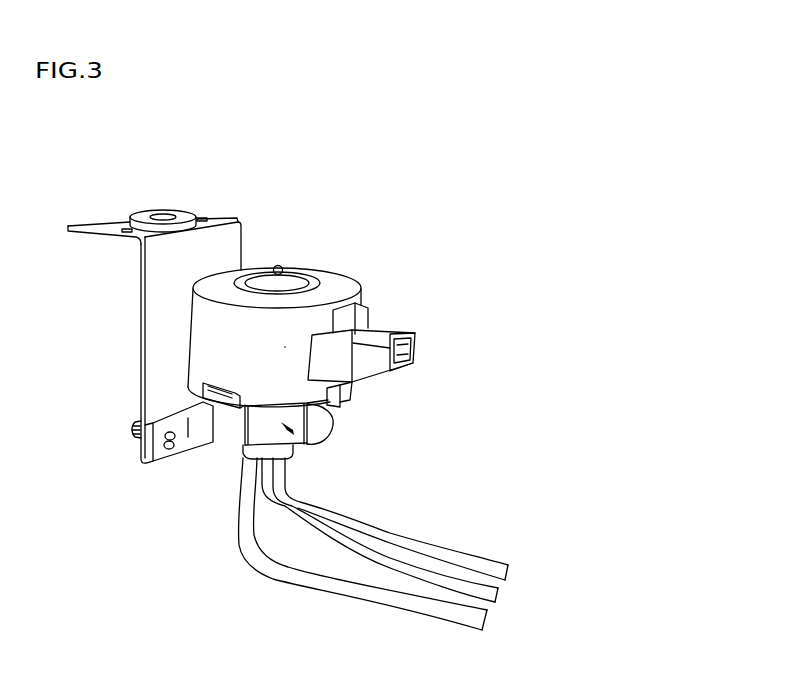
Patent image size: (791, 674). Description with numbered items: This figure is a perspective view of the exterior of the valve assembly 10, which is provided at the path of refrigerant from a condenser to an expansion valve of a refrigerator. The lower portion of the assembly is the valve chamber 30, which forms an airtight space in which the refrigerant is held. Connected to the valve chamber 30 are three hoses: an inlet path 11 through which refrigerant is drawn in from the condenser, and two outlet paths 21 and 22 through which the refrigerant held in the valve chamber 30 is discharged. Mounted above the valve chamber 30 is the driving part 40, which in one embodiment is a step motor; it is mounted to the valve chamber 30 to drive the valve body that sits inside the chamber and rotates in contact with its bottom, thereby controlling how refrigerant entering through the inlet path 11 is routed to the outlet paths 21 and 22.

The valve assembly 10 is at (380, 211).
The inlet path 11 is at (393, 602).
The outlet path 21 is at (457, 551).
The outlet path 22 is at (288, 481).
The valve chamber 30 is at (307, 442).
The driving part 40 is at (328, 279).